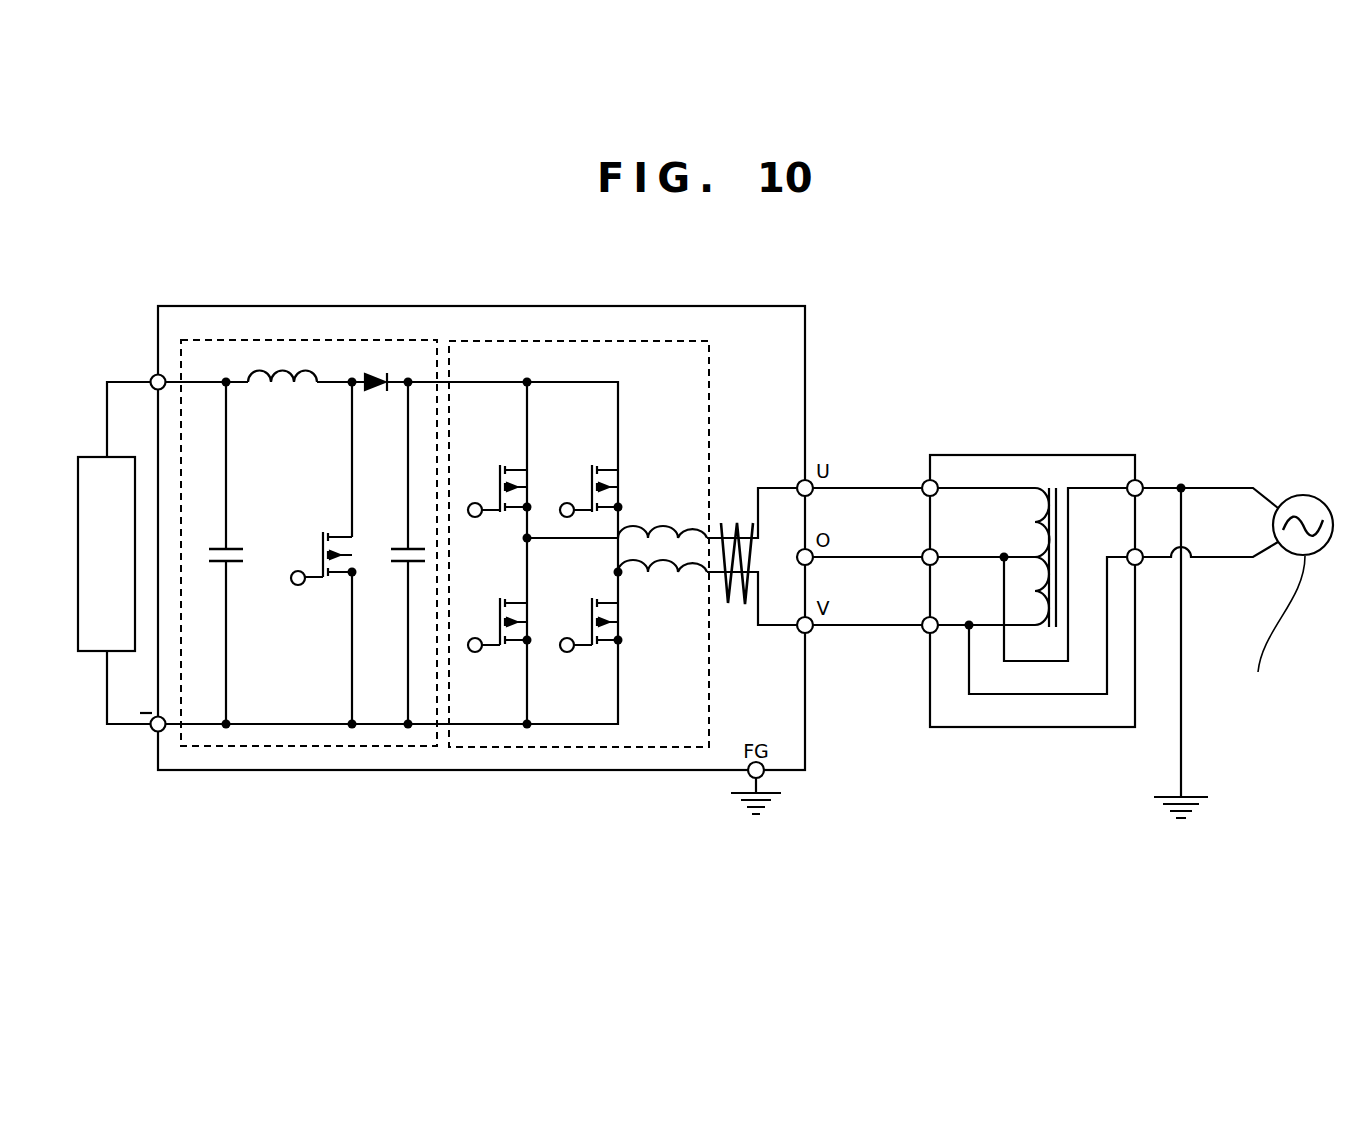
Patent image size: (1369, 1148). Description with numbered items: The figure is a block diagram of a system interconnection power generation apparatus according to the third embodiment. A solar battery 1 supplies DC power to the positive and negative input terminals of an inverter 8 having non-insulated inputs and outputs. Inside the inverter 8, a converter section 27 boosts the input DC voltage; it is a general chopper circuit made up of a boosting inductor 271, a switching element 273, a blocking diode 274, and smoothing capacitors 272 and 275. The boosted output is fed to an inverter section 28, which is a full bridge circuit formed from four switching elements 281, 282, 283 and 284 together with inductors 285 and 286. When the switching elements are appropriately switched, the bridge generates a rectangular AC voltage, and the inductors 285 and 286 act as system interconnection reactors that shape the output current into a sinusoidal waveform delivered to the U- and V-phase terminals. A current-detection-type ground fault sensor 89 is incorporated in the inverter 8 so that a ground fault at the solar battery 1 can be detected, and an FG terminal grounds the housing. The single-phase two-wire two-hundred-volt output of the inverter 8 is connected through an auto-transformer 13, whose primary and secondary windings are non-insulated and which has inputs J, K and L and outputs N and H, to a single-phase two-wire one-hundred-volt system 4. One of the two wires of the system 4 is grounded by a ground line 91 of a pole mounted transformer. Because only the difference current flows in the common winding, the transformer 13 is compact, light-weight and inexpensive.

The solar battery 1 is at (105, 457).
The single-phase two-wire 100-V system 4 is at (1305, 495).
The inverter 8 is at (462, 306).
The auto-transformer 13 is at (980, 455).
The converter section 27 is at (297, 340).
The inverter section 28 is at (587, 341).
The ground fault sensor 89 is at (736, 518).
The ground line 91 is at (1178, 740).
The boosting inductor 271 is at (283, 386).
The smoothing capacitor 272 is at (232, 547).
The switching element 273 is at (312, 586).
The blocking diode 274 is at (380, 395).
The smoothing capacitor 275 is at (402, 565).
The switching element 281 is at (500, 460).
The switching element 282 is at (592, 460).
The switching element 283 is at (500, 594).
The switching element 284 is at (592, 596).
The inductor 285 is at (646, 526).
The inductor 286 is at (645, 576).